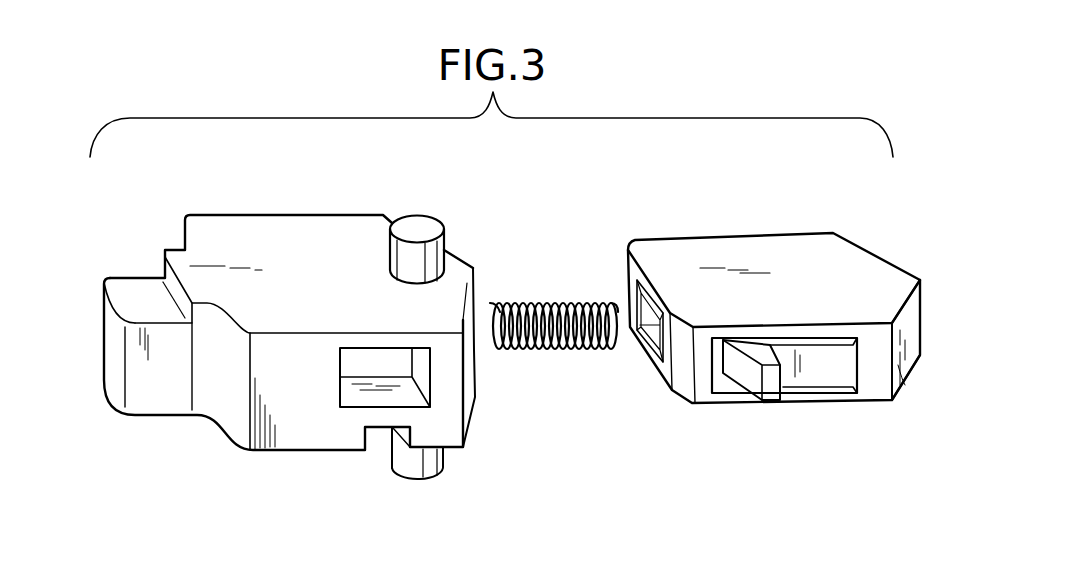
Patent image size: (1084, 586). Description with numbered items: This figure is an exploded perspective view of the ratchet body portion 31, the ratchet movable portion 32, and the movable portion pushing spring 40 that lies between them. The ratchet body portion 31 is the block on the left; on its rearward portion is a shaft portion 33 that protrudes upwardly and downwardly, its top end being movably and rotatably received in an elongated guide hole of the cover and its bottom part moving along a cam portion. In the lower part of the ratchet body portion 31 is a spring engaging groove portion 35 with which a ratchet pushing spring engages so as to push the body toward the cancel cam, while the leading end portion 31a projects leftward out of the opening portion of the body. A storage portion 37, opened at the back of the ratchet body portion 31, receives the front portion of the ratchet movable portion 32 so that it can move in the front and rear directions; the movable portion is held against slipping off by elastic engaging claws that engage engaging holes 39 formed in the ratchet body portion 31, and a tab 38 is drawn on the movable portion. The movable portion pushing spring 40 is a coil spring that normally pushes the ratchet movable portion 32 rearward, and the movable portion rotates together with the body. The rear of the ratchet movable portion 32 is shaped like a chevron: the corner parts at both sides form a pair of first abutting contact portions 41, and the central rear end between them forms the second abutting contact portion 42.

The ratchet body portion 31 is at (287, 232).
The leading end portion 31a is at (102, 300).
The ratchet movable portion 32 is at (780, 253).
The shaft portion 33 is at (417, 232).
The spring engaging groove portion 35 is at (375, 438).
The storage portion 37 is at (478, 340).
The engaging tab 38 is at (745, 373).
The engaging holes 39 is at (403, 385).
The movable portion pushing spring 40 is at (563, 300).
The first abutting contact portions 41 is at (834, 232).
The second abutting contact portion 42 is at (923, 320).